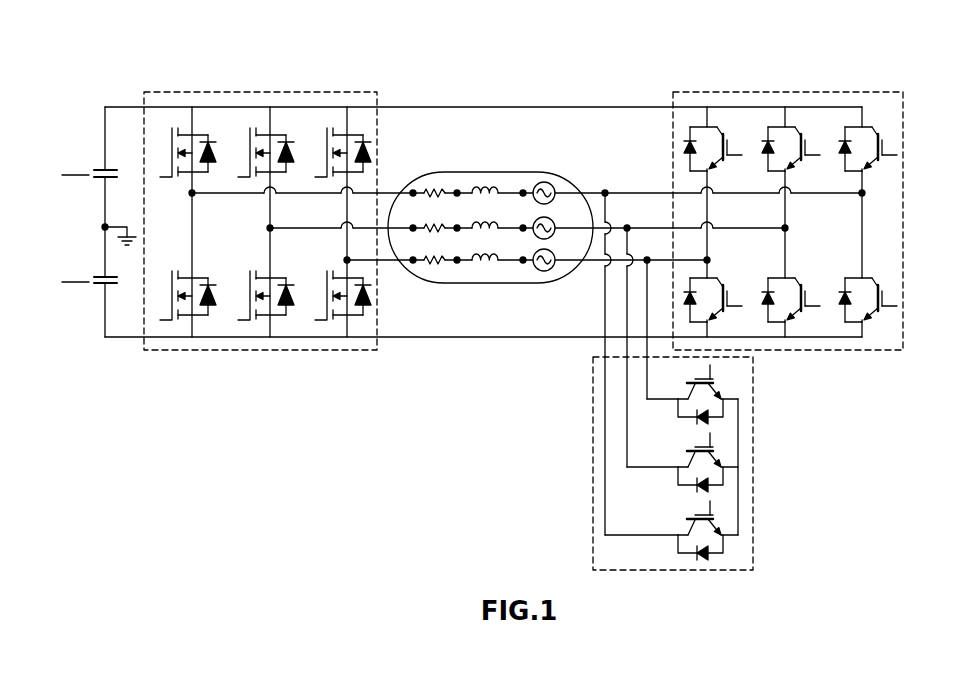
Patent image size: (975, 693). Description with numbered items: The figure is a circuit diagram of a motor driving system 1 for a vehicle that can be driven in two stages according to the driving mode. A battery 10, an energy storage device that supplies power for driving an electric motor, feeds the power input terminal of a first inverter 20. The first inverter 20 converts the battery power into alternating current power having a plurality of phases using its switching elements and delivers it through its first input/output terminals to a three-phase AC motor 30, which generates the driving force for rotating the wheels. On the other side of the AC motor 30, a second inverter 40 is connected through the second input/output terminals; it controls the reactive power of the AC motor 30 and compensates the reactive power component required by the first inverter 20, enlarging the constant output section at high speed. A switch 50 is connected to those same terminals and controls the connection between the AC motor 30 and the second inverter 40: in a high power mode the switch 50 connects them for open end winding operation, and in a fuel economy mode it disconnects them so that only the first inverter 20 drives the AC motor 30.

The motor driving system 1 is at (890, 40).
The battery 10 is at (95, 166).
The first inverter 20 is at (258, 92).
The AC motor 30 is at (487, 172).
The second inverter 40 is at (790, 92).
The switch 50 is at (753, 455).